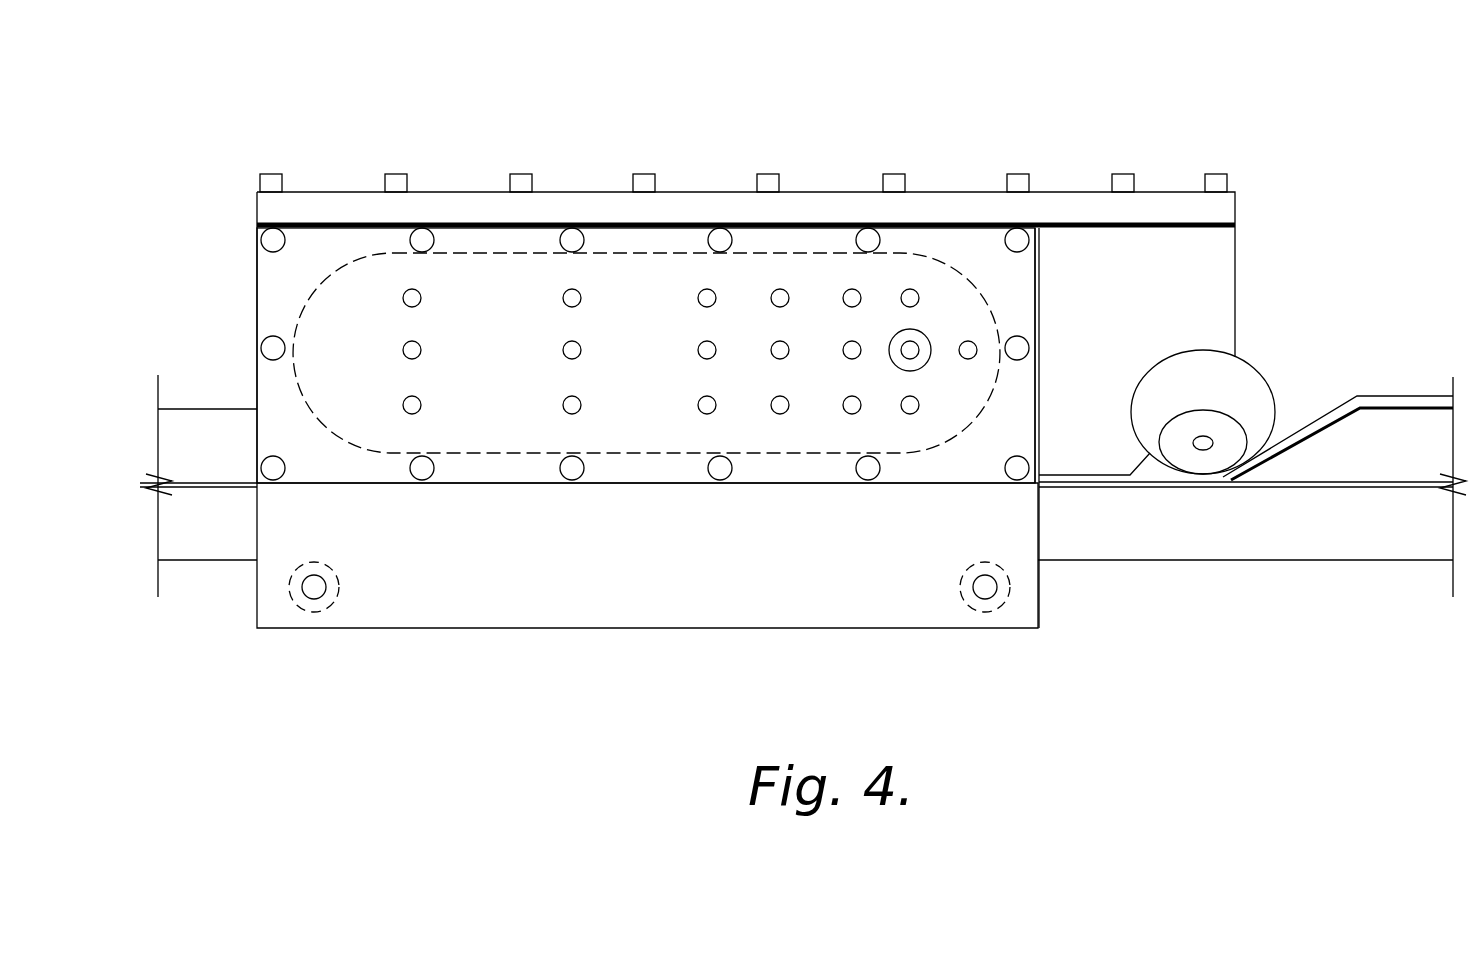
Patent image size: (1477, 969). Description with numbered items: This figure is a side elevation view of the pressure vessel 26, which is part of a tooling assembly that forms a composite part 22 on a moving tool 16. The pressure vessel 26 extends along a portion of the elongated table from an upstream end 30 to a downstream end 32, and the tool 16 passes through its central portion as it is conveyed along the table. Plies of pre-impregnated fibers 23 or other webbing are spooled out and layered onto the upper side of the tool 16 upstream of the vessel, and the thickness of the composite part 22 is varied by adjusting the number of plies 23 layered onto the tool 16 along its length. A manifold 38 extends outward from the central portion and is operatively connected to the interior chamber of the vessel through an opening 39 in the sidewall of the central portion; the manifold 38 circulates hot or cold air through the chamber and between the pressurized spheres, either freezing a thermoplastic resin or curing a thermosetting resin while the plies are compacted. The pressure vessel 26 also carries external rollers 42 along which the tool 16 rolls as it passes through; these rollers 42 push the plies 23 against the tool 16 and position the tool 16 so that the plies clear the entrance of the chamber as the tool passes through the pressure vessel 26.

The pressure vessel 26 is at (253, 130).
The downstream end 32 is at (238, 243).
The upstream end 30 is at (1284, 247).
The opening 39 is at (647, 453).
The manifold 38 is at (1027, 438).
The pre-impregnated fibers 23 is at (1357, 398).
The composite part 22 is at (205, 485).
The tool 16 is at (1287, 537).
The external rollers 42 is at (320, 605).